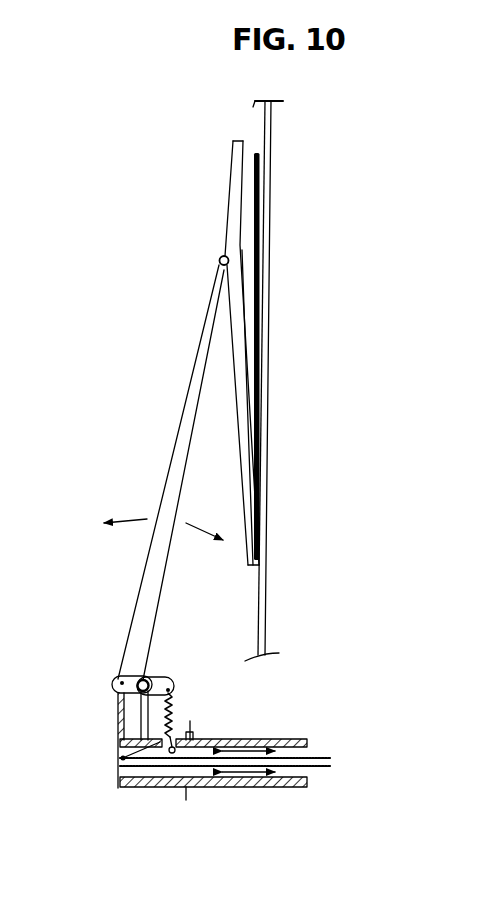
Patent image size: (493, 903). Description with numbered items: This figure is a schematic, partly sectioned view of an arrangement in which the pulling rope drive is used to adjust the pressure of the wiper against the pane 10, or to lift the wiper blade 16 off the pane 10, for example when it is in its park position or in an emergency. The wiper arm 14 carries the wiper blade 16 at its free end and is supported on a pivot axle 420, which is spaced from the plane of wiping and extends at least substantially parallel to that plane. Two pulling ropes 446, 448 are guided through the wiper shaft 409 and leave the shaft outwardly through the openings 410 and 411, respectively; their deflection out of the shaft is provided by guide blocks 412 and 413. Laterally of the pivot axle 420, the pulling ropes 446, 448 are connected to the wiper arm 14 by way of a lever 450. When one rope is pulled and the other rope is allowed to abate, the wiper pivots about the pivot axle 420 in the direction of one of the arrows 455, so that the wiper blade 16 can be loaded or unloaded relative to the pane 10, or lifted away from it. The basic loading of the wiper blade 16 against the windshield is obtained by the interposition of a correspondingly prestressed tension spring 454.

The pane 10 is at (262, 520).
The wiper blade 16 is at (225, 185).
The wiper arm 14 is at (188, 412).
The arrows 455 is at (135, 519).
The lever 450 is at (122, 677).
The pivot axle 420 is at (118, 694).
The pulling rope 448 is at (118, 715).
The tension spring 454 is at (172, 697).
The opening 411 is at (190, 720).
The guide block 412 is at (196, 735).
The wiper shaft 409 is at (273, 740).
The pulling rope 446 is at (320, 758).
The guide block 413 is at (120, 758).
The opening 410 is at (118, 767).